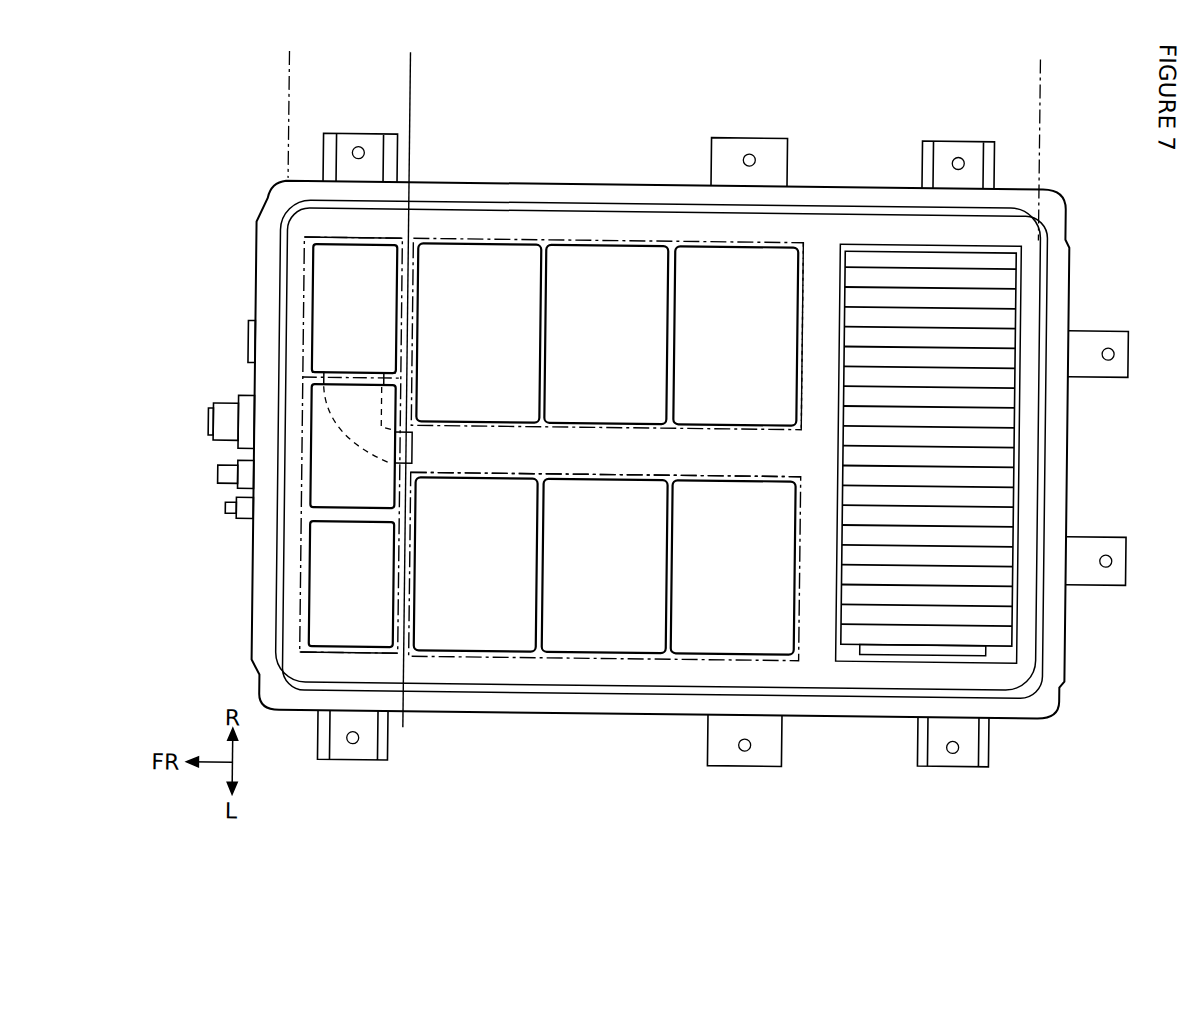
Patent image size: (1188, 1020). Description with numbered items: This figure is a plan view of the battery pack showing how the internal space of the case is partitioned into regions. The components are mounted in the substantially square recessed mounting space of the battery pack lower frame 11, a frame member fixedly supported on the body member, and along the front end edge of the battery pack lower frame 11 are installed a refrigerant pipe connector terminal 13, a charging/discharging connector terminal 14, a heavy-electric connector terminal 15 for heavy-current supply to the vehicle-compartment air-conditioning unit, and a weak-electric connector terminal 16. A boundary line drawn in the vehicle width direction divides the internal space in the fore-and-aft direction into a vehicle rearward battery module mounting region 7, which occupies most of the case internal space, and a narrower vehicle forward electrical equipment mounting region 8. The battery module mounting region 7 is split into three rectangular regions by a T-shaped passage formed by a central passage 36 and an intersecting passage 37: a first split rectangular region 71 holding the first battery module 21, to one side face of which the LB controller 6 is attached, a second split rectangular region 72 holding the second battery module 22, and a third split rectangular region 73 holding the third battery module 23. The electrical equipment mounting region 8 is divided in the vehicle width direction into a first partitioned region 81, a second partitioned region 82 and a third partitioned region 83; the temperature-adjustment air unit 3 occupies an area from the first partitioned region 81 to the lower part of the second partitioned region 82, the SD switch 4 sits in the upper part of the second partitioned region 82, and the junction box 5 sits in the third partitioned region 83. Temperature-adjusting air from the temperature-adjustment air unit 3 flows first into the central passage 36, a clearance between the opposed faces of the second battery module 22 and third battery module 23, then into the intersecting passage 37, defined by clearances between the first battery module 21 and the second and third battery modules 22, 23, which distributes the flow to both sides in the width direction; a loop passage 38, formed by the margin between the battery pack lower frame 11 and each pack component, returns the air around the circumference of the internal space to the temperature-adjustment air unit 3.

The temperature-adjustment air unit 3 is at (336, 293).
The SD switch 4 is at (338, 482).
The junction box 5 is at (339, 600).
The LB controller 6 is at (893, 648).
The battery module mounting region 7 is at (1036, 80).
The electrical equipment mounting region 8 is at (406, 80).
The battery pack lower frame 11 is at (481, 703).
The refrigerant pipe connector terminal 13 is at (247, 345).
The charging/discharging connector terminal 14 is at (208, 424).
The heavy-electric connector terminal 15 is at (218, 478).
The weak-electric connector terminal 16 is at (226, 512).
The first battery module 21 is at (930, 457).
The second battery module 22 is at (599, 325).
The third battery module 23 is at (603, 571).
The central passage 36 is at (627, 450).
The intersecting passage 37 is at (818, 391).
The loop passage 38 is at (752, 230).
The first split rectangular region 71 is at (878, 242).
The second split rectangular region 72 is at (578, 240).
The third split rectangular region 73 is at (538, 659).
The first partitioned region 81 is at (326, 238).
The second partitioned region 82 is at (303, 398).
The third partitioned region 83 is at (293, 632).